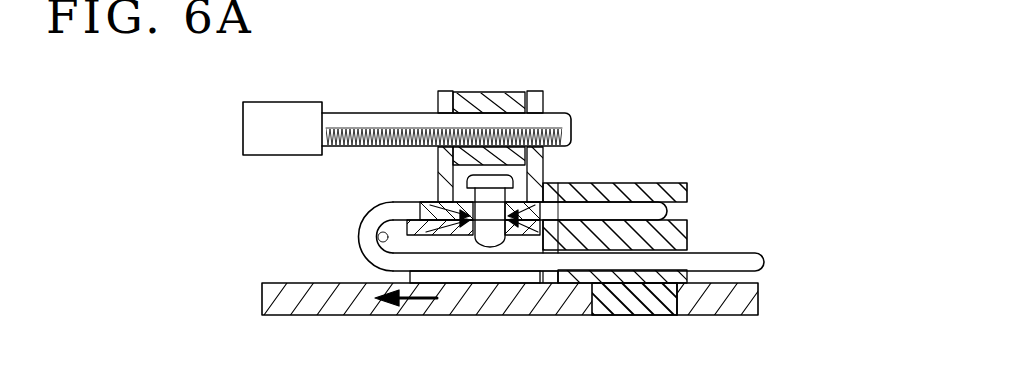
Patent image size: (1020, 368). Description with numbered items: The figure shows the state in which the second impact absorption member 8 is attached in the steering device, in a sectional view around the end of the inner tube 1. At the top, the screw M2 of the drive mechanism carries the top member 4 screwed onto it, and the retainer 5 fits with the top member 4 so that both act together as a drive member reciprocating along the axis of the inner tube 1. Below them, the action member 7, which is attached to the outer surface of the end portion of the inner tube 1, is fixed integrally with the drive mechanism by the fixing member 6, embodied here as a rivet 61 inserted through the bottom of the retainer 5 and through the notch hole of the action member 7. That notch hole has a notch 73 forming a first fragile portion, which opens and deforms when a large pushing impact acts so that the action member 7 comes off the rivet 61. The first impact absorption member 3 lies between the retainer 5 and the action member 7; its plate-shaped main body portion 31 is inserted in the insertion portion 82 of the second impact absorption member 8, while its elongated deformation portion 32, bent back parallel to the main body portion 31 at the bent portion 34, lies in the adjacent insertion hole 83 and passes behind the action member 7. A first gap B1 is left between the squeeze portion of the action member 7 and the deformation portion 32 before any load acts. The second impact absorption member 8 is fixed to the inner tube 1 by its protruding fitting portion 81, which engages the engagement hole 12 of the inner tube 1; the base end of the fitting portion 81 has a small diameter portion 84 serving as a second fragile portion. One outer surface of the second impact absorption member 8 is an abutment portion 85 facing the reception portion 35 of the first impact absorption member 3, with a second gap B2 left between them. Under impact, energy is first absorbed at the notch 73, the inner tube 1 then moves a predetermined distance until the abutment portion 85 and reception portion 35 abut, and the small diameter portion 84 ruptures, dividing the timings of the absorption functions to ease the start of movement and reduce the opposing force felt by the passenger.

The inner tube 1 is at (501, 301).
The first impact absorption member 3 is at (542, 188).
The top member 4 is at (482, 91).
The retainer 5 is at (436, 100).
The fixing member 6 is at (463, 191).
The action member 7 is at (408, 265).
The second impact absorption member 8 is at (646, 206).
The engagement hole 12 is at (680, 312).
The main body portion 31 is at (622, 212).
The deformation portion 32 is at (745, 253).
The bent portion 34 is at (360, 233).
The reception portion 35 is at (558, 190).
The rivet 61 is at (437, 196).
The notch 73 is at (513, 238).
The fitting portion 81 is at (613, 312).
The insertion portion 82 is at (640, 188).
The insertion hole 83 is at (688, 245).
The small diameter portion 84 is at (597, 284).
The abutment portion 85 is at (551, 150).
The screw M2 is at (367, 112).
The first gap B1 is at (378, 237).
The second gap B2 is at (562, 215).